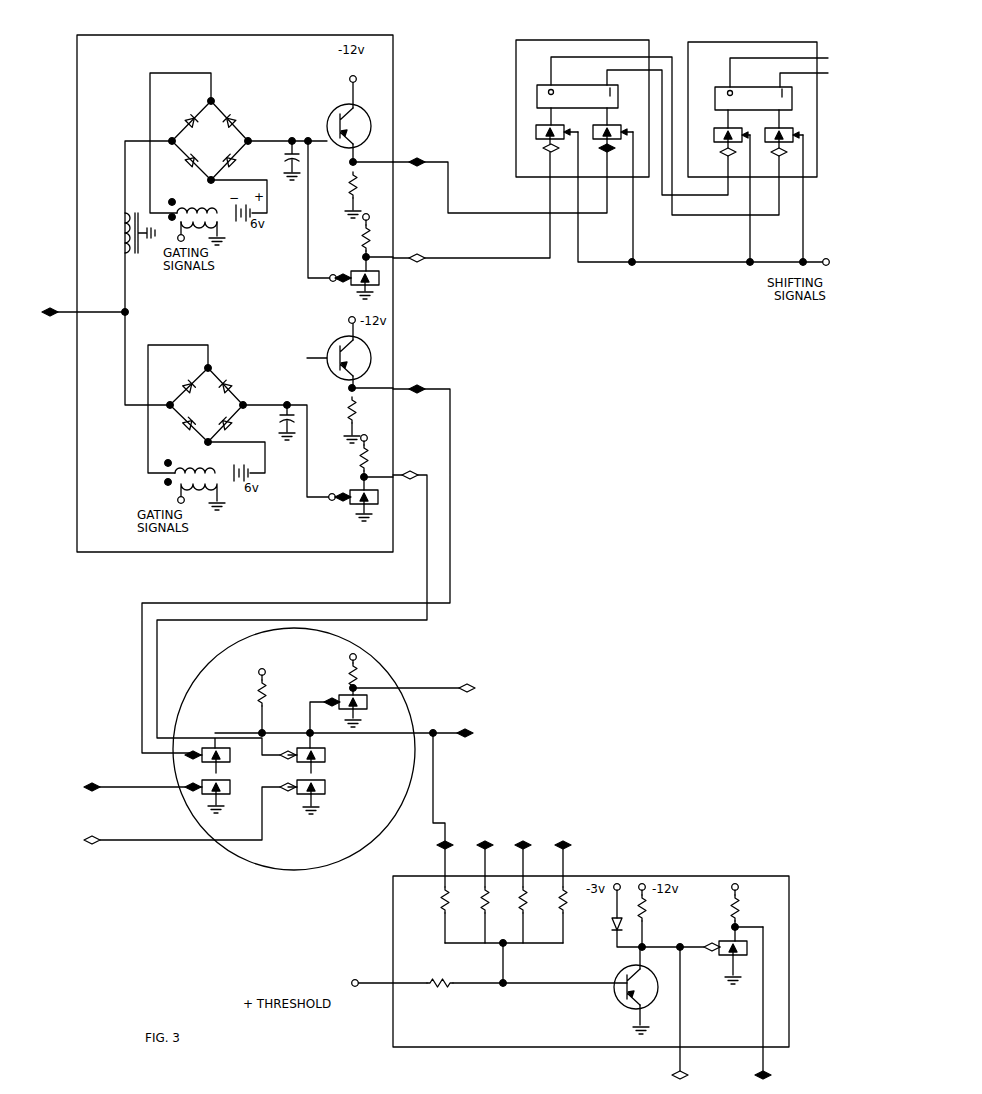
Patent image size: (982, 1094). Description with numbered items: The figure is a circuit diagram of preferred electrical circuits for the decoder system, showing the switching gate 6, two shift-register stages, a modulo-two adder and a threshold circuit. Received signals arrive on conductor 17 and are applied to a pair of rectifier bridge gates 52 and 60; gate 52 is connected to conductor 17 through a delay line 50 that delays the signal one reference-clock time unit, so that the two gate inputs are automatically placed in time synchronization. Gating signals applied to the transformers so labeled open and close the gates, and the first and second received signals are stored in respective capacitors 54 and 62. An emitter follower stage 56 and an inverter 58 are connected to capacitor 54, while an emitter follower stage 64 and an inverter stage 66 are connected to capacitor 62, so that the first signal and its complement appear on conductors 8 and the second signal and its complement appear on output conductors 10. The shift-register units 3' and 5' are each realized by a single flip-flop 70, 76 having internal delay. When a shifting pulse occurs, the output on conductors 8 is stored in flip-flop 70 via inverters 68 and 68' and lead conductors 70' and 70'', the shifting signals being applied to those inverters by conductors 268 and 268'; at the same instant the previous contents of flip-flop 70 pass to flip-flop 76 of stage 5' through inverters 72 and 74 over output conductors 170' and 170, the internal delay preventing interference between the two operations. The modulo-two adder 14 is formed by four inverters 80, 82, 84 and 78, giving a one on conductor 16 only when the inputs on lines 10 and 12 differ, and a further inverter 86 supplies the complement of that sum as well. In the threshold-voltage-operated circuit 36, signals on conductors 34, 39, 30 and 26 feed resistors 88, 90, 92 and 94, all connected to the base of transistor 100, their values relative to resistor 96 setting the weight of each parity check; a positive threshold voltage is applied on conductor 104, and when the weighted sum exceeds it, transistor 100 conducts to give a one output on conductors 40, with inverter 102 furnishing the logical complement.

The switching gate 6 is at (162, 35).
The conductor 17 is at (46, 308).
The delay line 50 is at (122, 224).
The rectifier bridge gate 52 is at (210, 141).
The capacitor 54 is at (287, 153).
The emitter follower stage 56 is at (333, 108).
The inverter 58 is at (353, 273).
The rectifier bridge gate 60 is at (207, 405).
The capacitor 62 is at (282, 416).
The emitter follower stage 64 is at (335, 341).
The inverter stage 66 is at (350, 491).
The conductors 8 is at (448, 257).
The output conductors 10 is at (397, 474).
The shift-register unit 3' is at (582, 95).
The shift-register unit 5' is at (752, 95).
The flip-flop 70 is at (571, 86).
The lead conductor 70' is at (537, 116).
The lead conductor 70'' is at (627, 118).
The inverter 68 is at (550, 140).
The inverter 68' is at (606, 140).
The output conductor 170 is at (665, 115).
The output conductor 170' is at (667, 142).
The conductor 268 is at (703, 213).
The conductor 268' is at (655, 198).
The inverter 72 is at (718, 144).
The inverter 74 is at (772, 144).
The flip-flop 76 is at (757, 87).
The line 12 is at (107, 787).
The modulo-two adder 14 is at (245, 862).
The conductor 16 is at (450, 692).
The inverter 78 is at (229, 793).
The inverter 80 is at (231, 757).
The inverter 82 is at (326, 795).
The inverter 84 is at (326, 757).
The inverter 86 is at (368, 705).
The conductor 34 is at (447, 838).
The conductor 39 is at (487, 862).
The conductor 30 is at (525, 862).
The conductor 26 is at (565, 862).
The threshold-voltage-operated circuit 36 is at (594, 1048).
The resistor 88 is at (440, 901).
The resistor 90 is at (481, 904).
The resistor 92 is at (519, 899).
The resistor 94 is at (559, 904).
The resistor 96 is at (443, 988).
The transistor 100 is at (621, 990).
The inverter 102 is at (723, 940).
The conductor 104 is at (356, 972).
The conductors 40 is at (763, 1053).